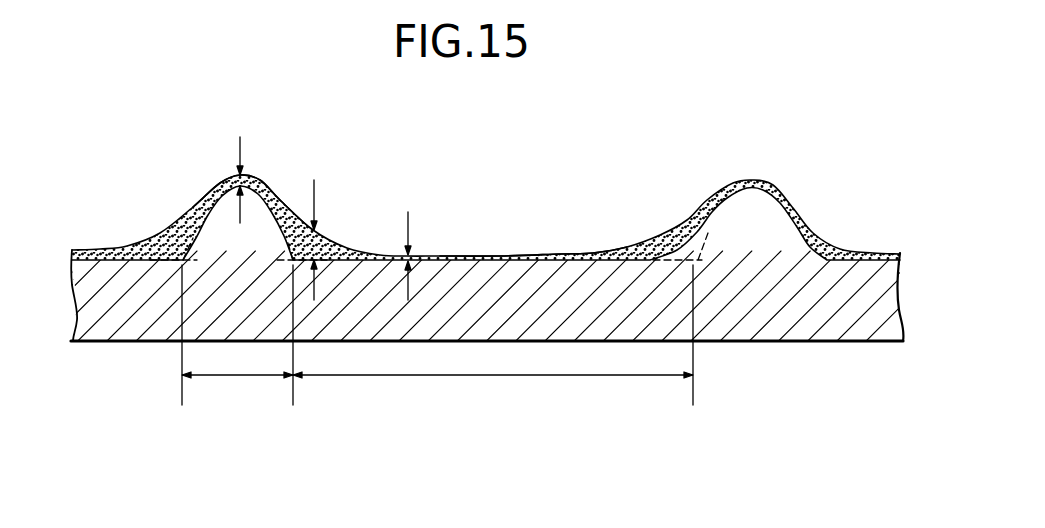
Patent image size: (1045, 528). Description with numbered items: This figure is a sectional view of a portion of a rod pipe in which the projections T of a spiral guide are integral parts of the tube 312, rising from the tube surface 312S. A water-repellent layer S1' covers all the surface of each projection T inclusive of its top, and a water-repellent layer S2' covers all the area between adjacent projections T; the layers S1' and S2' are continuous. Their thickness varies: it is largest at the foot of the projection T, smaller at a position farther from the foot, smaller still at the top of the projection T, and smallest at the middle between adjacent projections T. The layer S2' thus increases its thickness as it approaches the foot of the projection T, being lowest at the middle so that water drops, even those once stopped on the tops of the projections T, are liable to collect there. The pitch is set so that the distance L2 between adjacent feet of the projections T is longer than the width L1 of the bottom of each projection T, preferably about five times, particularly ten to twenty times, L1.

The projection T is at (215, 217).
The tube 312 is at (495, 287).
The substrate surface 312S is at (430, 252).
The water-repellent layer S1' is at (253, 162).
The water-repellent layer S2' is at (533, 195).
The width of the bottom of each projection L1 is at (237, 339).
The distance between adjacent feet of projections L2 is at (493, 339).